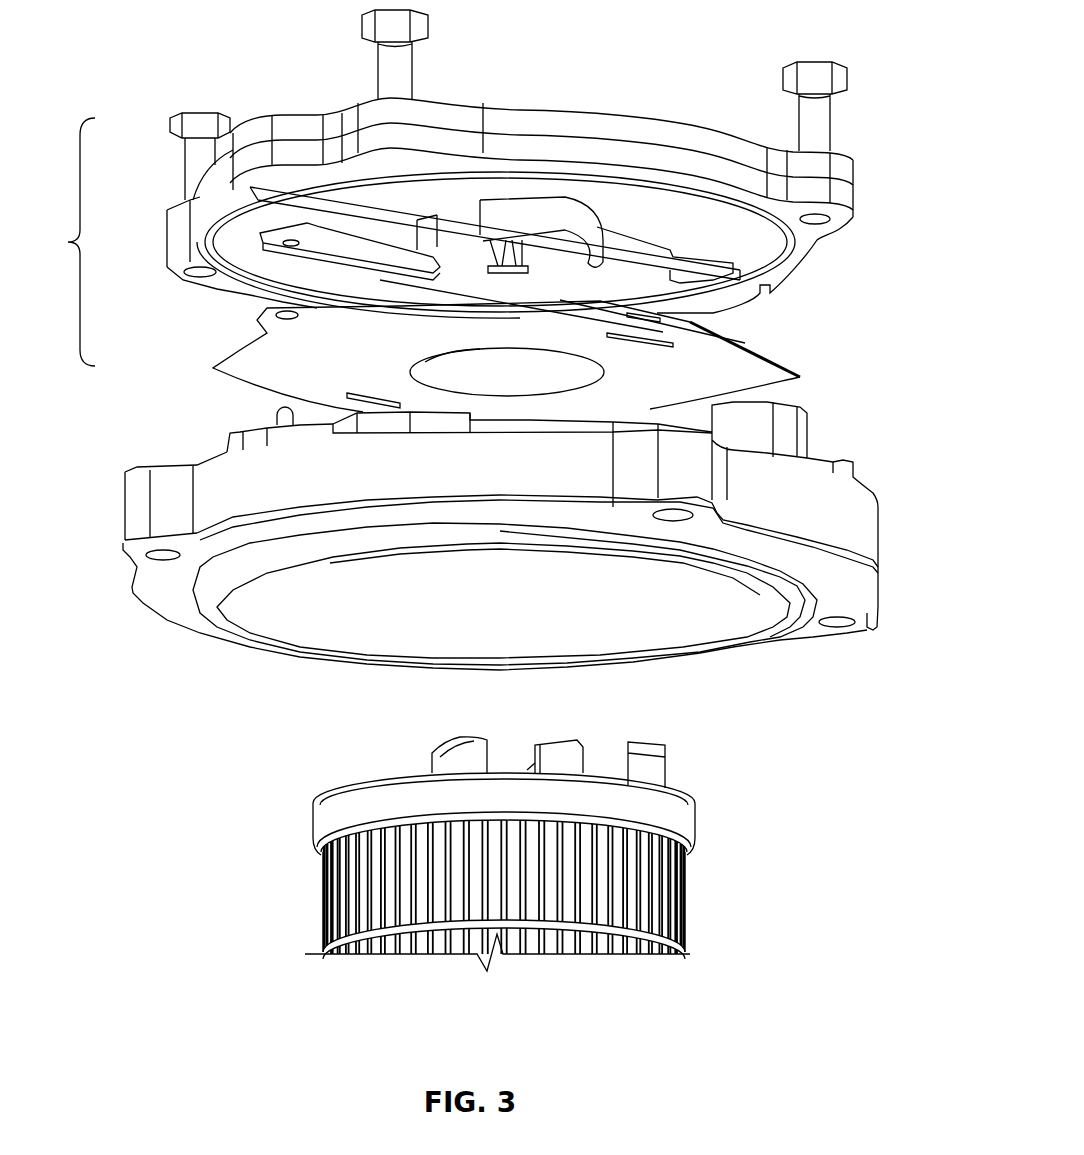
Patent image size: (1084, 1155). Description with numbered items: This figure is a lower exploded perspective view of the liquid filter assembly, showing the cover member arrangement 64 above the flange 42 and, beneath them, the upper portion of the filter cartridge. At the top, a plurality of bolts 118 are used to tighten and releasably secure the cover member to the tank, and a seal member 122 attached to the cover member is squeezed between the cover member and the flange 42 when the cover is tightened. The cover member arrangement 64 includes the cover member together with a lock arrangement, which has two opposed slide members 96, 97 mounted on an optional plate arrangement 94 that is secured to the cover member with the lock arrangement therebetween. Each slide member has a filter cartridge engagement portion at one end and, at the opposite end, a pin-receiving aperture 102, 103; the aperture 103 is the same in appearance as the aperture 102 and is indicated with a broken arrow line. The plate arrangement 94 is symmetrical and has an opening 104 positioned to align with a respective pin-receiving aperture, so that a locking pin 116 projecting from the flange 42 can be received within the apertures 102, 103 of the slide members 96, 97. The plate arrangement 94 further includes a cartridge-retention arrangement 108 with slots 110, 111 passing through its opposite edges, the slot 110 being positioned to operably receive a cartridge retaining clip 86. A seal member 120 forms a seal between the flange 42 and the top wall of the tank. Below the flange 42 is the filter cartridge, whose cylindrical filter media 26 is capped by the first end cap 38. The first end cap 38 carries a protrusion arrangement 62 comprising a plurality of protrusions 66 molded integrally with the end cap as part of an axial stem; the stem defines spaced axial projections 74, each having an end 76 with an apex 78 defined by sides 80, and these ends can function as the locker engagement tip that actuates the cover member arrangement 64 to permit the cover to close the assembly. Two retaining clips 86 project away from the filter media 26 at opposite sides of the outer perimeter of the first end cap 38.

The bolts 118 is at (862, 78).
The seal member 122 is at (835, 240).
The cover member arrangement 64 is at (383, 242).
The slide member 96 is at (250, 234).
The pin-receiving aperture 102 is at (292, 250).
The opening 104 is at (255, 320).
The locking pin 116 is at (268, 408).
The slot 111 is at (437, 347).
The cartridge-retention arrangement 108 is at (450, 375).
The pin-receiving aperture 103 is at (757, 315).
The slot 110 is at (728, 335).
The slide member 97 is at (747, 343).
The plate arrangement 94 is at (797, 388).
The flange 42 is at (459, 536).
The seal member 120 is at (145, 598).
The protrusions 66 is at (495, 713).
The protrusion arrangement 62 is at (510, 792).
The sides 80 is at (440, 748).
The apex 78 is at (458, 737).
The end 76 is at (536, 745).
The spaced axial projections 74 is at (446, 754).
The retaining clips 86 is at (683, 756).
The first end cap 38 is at (313, 820).
The filter media 26 is at (680, 880).